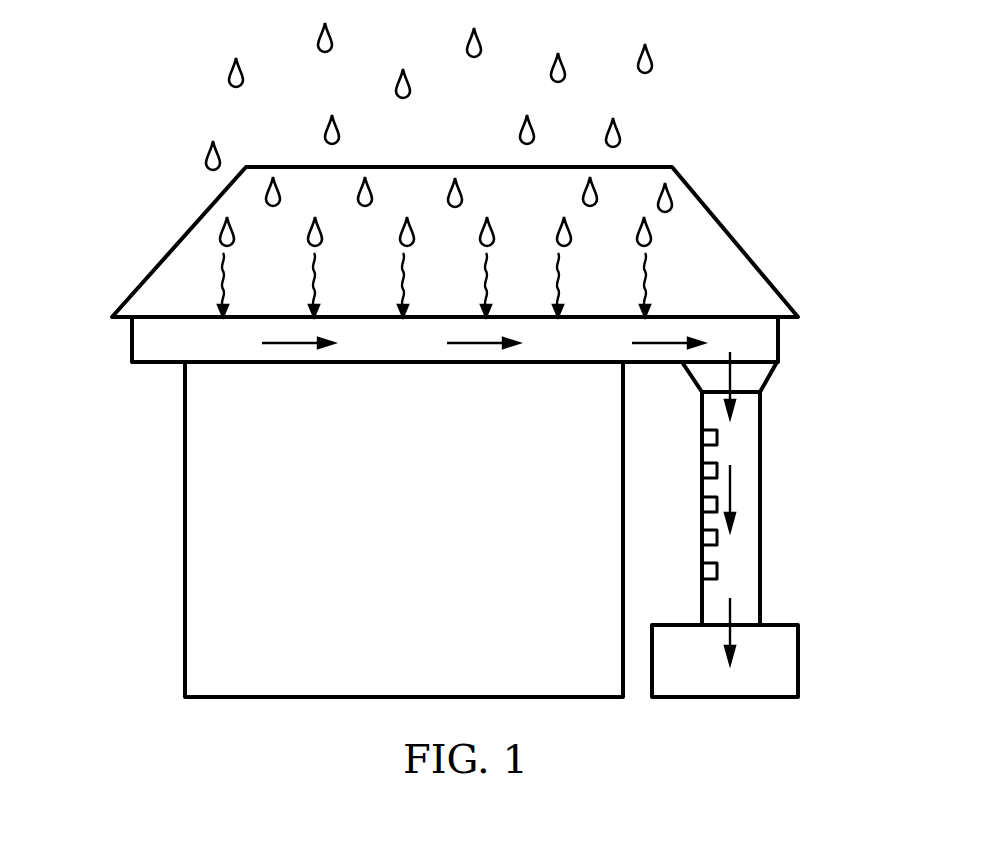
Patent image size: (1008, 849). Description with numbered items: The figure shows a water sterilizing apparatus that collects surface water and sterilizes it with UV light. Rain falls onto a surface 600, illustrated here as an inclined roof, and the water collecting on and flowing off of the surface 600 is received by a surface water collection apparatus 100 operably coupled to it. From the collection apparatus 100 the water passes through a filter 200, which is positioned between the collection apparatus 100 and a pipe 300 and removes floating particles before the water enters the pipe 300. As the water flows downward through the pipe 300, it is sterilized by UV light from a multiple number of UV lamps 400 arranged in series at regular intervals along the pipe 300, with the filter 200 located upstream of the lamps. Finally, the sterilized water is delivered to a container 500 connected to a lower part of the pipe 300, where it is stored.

The surface water collection apparatus 100 is at (148, 342).
The filter 200 is at (758, 377).
The pipe 300 is at (760, 425).
The UV lamps 400 is at (717, 468).
The container 500 is at (782, 640).
The surface 600 is at (703, 221).